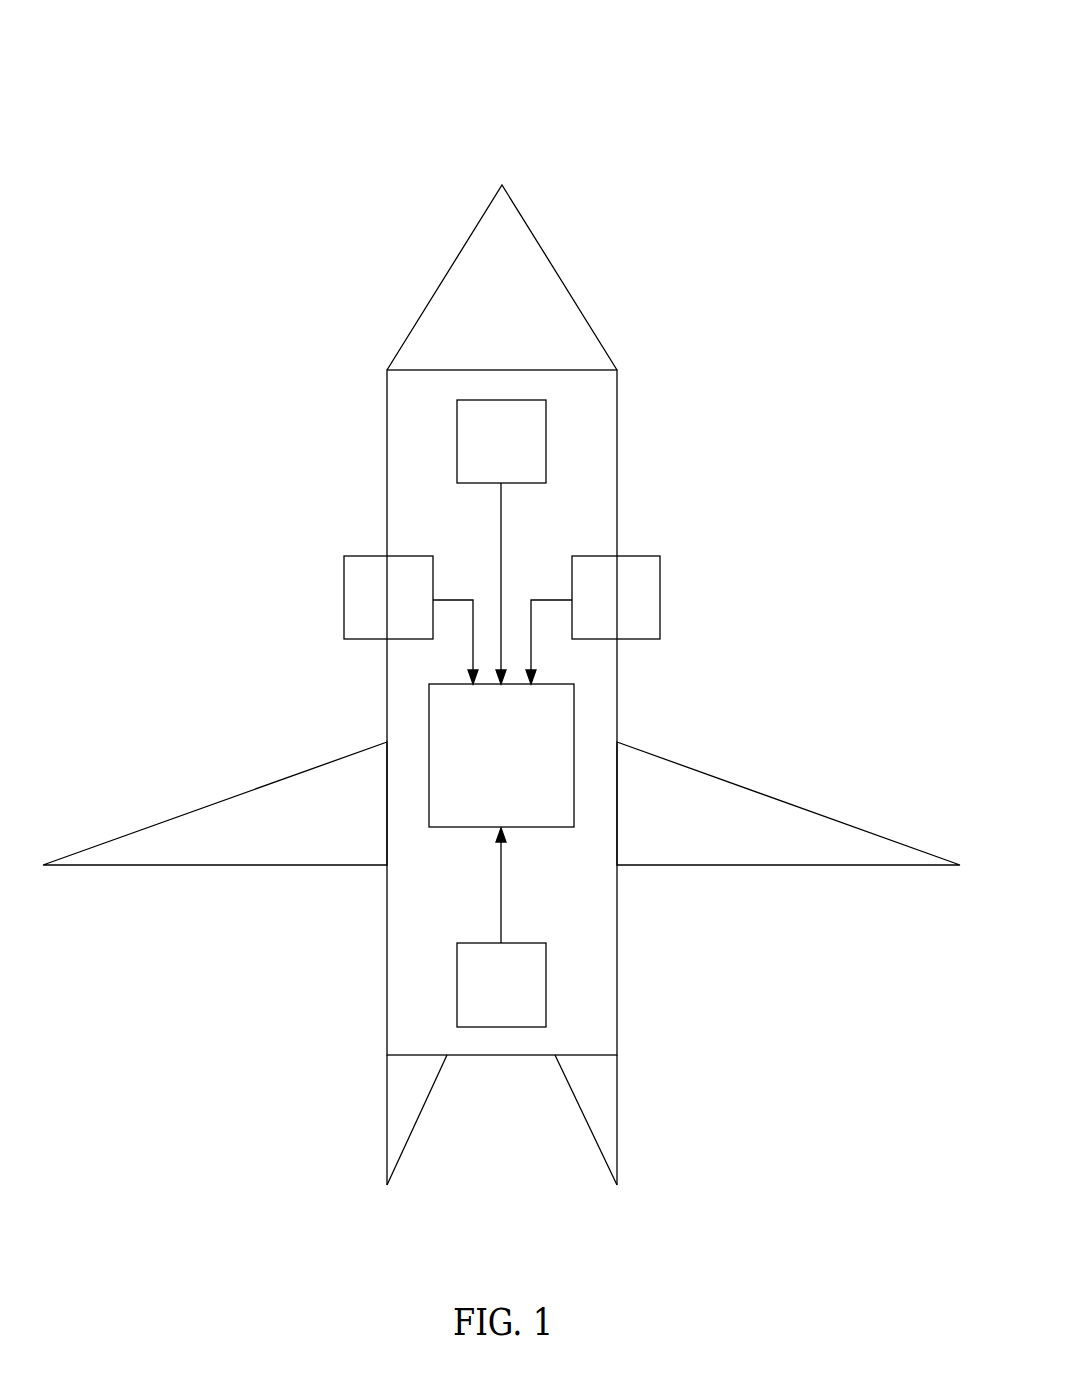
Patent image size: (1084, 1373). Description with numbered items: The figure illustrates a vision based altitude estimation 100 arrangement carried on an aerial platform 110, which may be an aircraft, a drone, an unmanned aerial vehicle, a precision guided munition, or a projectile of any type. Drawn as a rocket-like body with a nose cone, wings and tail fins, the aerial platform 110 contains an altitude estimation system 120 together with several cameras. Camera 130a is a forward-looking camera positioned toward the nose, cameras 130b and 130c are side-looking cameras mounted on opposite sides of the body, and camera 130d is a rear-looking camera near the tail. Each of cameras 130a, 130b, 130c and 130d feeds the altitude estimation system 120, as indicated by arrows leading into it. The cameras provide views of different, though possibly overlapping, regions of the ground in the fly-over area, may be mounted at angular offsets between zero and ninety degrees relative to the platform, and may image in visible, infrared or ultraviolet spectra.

The vision based altitude estimation 100 is at (501, 596).
The aerial platform 110 is at (633, 411).
The altitude estimation system 120 is at (501, 755).
The forward-looking camera 130a is at (501, 542).
The side-looking camera 130b is at (411, 620).
The side-looking camera 130c is at (593, 620).
The rear-looking camera 130d is at (501, 927).